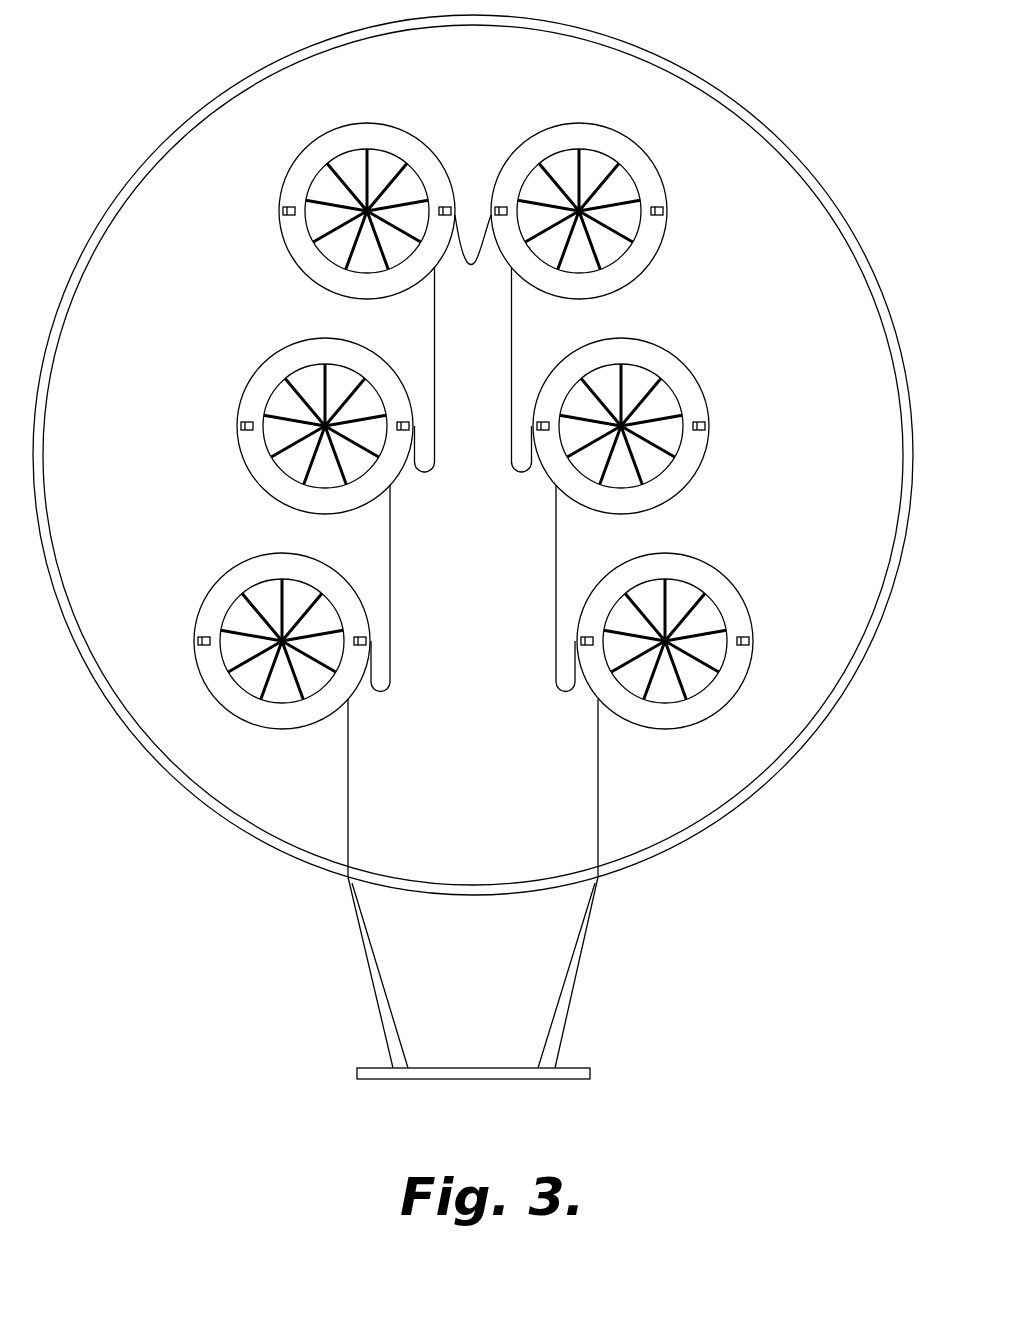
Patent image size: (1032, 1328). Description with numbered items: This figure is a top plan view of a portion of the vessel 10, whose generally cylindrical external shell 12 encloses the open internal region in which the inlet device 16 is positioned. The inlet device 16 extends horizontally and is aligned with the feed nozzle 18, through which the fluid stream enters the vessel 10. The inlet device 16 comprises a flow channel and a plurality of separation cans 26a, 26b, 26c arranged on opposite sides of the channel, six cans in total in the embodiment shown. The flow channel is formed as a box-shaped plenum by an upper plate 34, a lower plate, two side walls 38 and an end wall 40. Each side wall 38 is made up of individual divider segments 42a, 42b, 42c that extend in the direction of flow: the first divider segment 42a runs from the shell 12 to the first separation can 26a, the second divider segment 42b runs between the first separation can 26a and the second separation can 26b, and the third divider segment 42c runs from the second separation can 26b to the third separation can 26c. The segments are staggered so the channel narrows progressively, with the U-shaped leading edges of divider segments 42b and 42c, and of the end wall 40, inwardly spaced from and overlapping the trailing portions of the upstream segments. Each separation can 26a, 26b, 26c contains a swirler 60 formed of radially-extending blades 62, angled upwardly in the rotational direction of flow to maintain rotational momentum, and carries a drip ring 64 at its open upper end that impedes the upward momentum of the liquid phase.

The vessel 10 is at (702, 77).
The external shell 12 is at (787, 153).
The inlet device 16 is at (512, 810).
The feed nozzle 18 is at (565, 1018).
The first separation can 26a is at (472, 630).
The second separation can 26b is at (486, 411).
The third separation can 26c is at (562, 122).
The upper plate 34 is at (497, 810).
The side walls 38 is at (348, 817).
The end wall 40 is at (475, 258).
The first divider segment 42a is at (497, 810).
The second divider segment 42b is at (390, 548).
The third divider segment 42c is at (434, 330).
The swirler 60 is at (678, 608).
The radially-extending blades 62 is at (710, 647).
The drip ring 64 is at (672, 357).